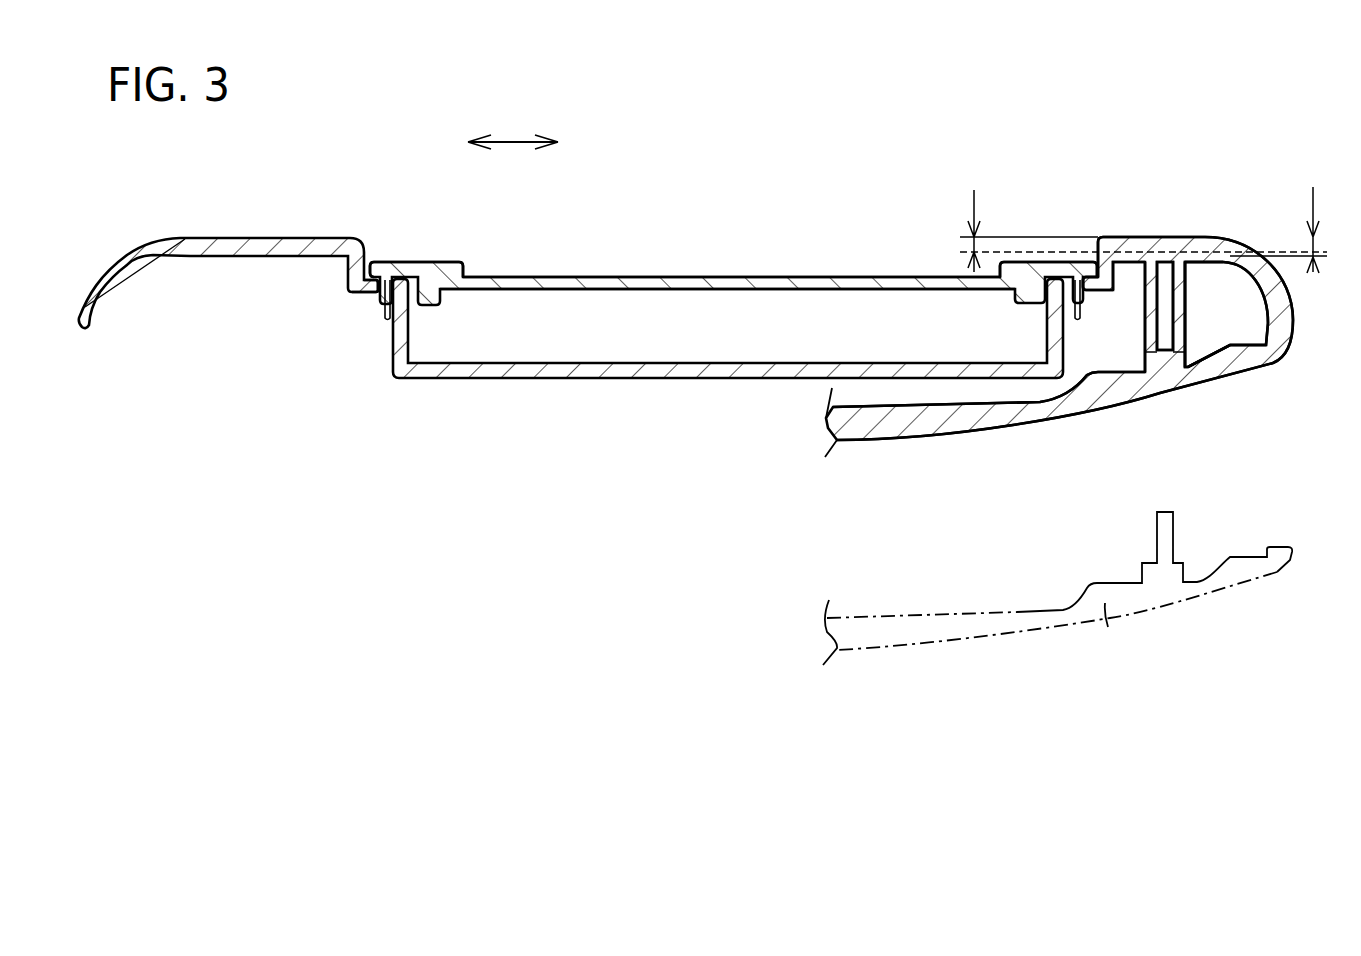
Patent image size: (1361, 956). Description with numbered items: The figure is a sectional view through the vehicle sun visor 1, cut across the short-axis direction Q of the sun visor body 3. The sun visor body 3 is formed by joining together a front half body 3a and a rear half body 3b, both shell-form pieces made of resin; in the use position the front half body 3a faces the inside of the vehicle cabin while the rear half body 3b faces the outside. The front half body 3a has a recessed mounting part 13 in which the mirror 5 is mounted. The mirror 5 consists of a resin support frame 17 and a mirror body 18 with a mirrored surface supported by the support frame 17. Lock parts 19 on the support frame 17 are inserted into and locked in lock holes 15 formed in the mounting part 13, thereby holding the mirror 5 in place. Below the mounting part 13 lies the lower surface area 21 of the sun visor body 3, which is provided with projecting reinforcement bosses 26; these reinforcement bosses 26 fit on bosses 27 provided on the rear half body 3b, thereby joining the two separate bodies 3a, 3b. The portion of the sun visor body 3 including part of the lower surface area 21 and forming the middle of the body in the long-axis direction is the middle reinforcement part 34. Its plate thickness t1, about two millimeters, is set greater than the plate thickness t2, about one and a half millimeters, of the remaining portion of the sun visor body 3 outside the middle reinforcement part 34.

The vehicle sun visor 1 is at (766, 175).
The sun visor body 3 is at (1247, 404).
The front half body 3a is at (1132, 237).
The rear half body 3b is at (1105, 393).
The mirror 5 is at (580, 249).
The mounting part 13 is at (446, 321).
The lock holes 15 is at (383, 308).
The support frame 17 is at (403, 263).
The mirror body 18 is at (678, 277).
The lock parts 19 is at (370, 300).
The lower surface area 21 is at (1218, 313).
The reinforcement bosses 26 is at (1192, 285).
The bosses 27 is at (1168, 355).
The middle reinforcement part 34 is at (1184, 203).
The short-axis direction Q is at (502, 140).
The plate thickness of the middle reinforcement part t1 is at (1313, 197).
The plate thickness of the sun visor body other than the middle reinforcement part t2 is at (975, 205).